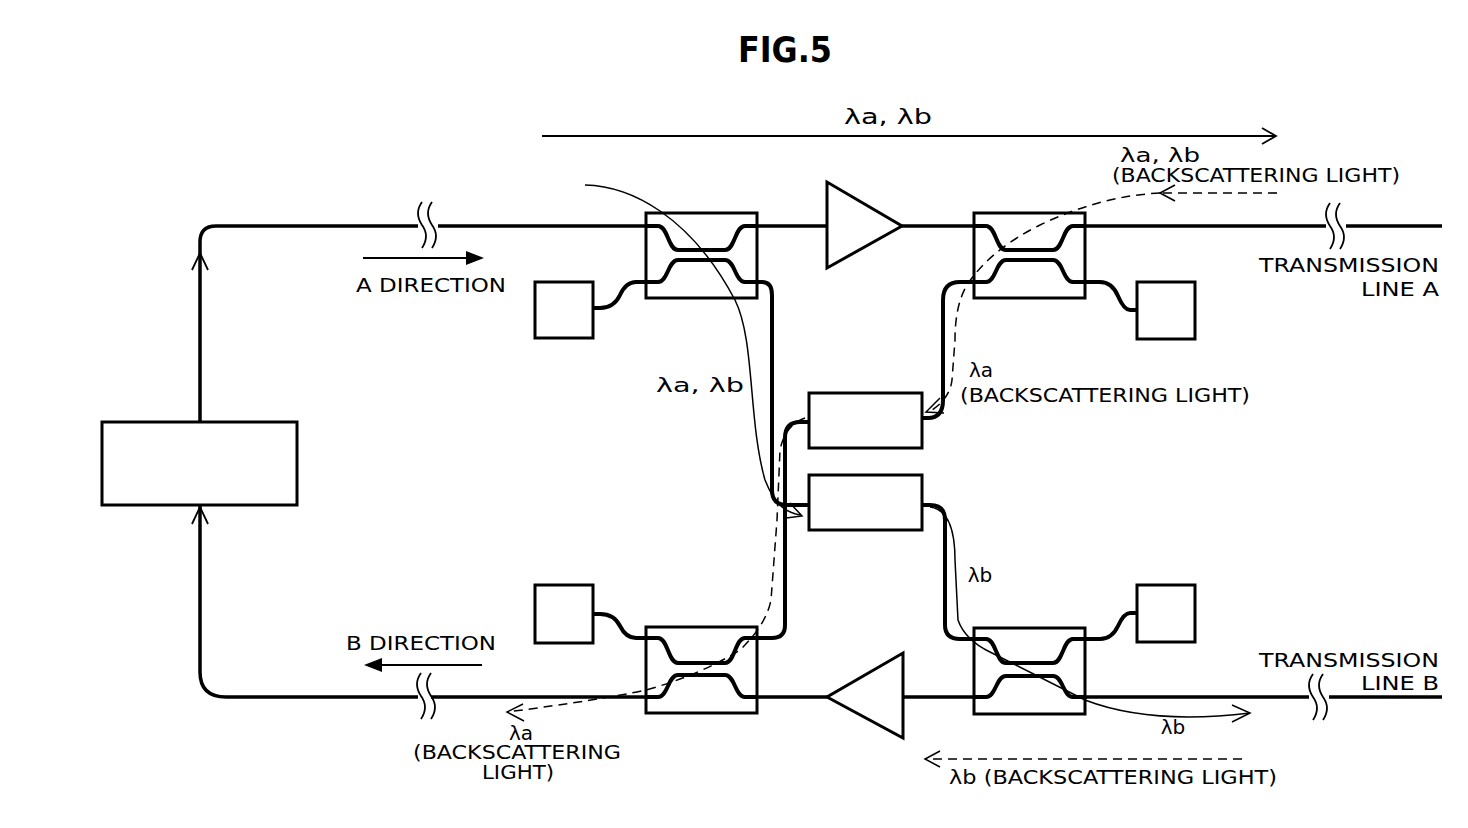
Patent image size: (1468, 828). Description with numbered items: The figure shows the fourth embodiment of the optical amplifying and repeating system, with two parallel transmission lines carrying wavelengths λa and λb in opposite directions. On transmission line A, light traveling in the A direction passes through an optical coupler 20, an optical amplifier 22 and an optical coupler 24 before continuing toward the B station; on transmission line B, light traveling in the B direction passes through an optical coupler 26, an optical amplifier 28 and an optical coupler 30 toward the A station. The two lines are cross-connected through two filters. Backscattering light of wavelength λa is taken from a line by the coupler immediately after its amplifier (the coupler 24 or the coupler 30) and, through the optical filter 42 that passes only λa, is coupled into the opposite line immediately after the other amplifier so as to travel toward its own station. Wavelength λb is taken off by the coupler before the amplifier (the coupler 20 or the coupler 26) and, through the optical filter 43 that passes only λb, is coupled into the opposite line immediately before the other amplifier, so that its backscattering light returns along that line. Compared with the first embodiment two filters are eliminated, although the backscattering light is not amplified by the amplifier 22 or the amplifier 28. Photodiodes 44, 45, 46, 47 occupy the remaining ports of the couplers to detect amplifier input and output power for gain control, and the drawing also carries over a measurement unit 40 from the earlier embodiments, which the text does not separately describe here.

The optical coupler 20 is at (715, 212).
The optical amplifier 22 is at (870, 205).
The optical coupler 24 is at (1090, 252).
The optical coupler 26 is at (1027, 627).
The optical amplifier 28 is at (862, 670).
The optical coupler 30 is at (668, 626).
The OTDR measurement unit 40 is at (298, 466).
The optical filter 42 is at (862, 392).
The optical filter 43 is at (864, 531).
The photodiode 44 is at (565, 340).
The photodiode 45 is at (1196, 312).
The photodiode 46 is at (1196, 617).
The photodiode 47 is at (560, 584).